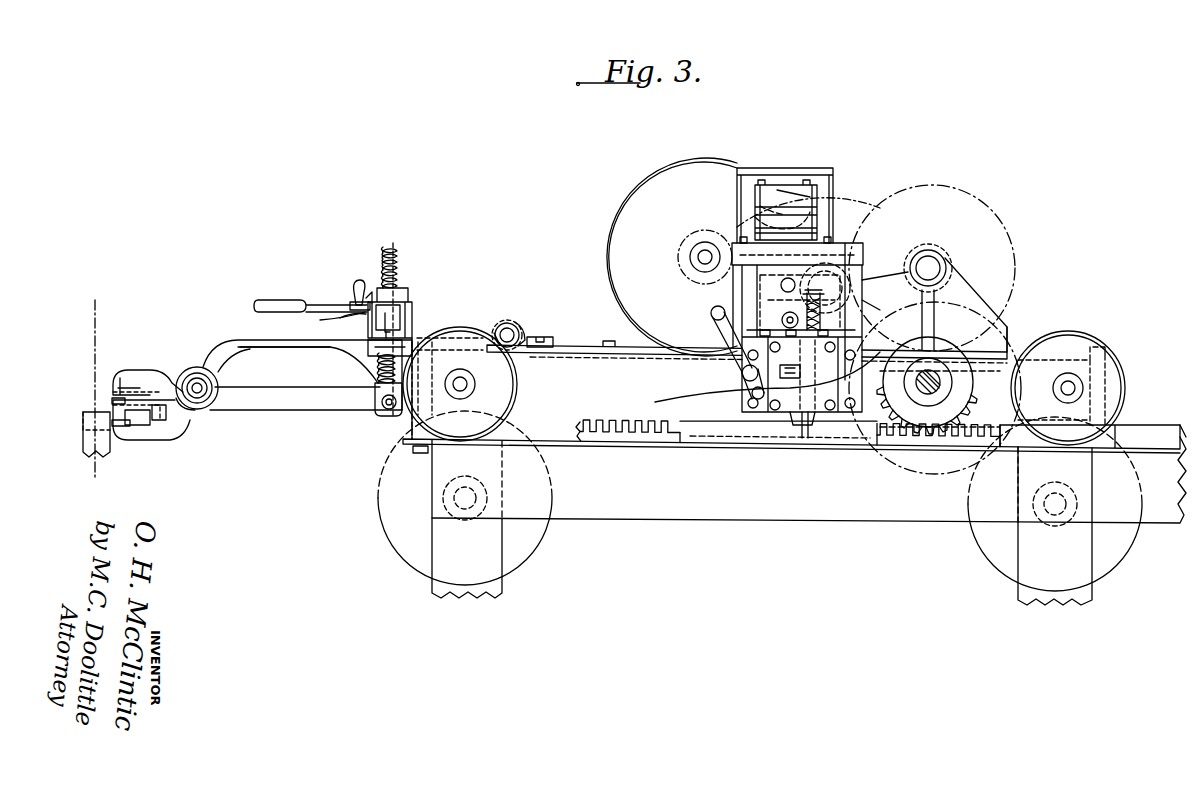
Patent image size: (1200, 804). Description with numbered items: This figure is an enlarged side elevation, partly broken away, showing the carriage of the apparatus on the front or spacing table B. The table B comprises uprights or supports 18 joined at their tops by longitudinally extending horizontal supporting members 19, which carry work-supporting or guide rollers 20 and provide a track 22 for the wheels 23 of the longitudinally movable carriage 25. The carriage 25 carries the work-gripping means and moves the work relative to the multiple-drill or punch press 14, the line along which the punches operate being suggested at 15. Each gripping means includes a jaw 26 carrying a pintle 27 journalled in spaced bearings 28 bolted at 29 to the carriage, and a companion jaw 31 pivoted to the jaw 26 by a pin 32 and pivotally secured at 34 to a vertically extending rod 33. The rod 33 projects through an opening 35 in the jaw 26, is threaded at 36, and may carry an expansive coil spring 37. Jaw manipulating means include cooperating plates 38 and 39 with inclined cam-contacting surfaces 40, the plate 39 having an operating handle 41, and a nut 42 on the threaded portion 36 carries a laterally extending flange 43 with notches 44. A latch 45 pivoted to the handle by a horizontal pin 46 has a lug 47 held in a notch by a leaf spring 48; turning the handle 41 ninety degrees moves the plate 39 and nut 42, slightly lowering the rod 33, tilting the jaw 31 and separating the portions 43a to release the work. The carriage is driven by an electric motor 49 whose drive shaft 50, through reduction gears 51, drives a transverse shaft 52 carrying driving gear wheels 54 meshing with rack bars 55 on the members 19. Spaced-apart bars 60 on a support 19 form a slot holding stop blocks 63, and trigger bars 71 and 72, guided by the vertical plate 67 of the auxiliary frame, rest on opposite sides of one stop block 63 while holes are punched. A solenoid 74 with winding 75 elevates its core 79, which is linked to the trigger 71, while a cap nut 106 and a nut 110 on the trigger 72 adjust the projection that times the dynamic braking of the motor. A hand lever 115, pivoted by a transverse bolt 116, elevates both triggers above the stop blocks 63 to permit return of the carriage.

The multiple-drill or punch press 14 is at (83, 437).
The line of punch or drill operation 15 is at (95, 338).
The uprights or supports 18 is at (470, 570).
The supporting members 19 is at (728, 498).
The work-supporting or guide rollers 20 is at (533, 543).
The track 22 is at (570, 442).
The wheels 23 is at (1103, 329).
The carriage 25 is at (648, 396).
The jaw 26 is at (130, 445).
The pintle 27 is at (520, 335).
The bearings 28 is at (510, 326).
The bolts 29 is at (553, 342).
The companion jaw 31 is at (138, 378).
The pin 32 is at (200, 398).
The vertically extending rod 33 is at (385, 357).
The pivotal connection 34 is at (388, 410).
The opening 35 is at (336, 348).
The threaded portion 36 is at (398, 255).
The expansive coil spring 37 is at (376, 370).
The plate 38 is at (418, 340).
The plate 39 is at (407, 312).
The inclined or cam-contacting surfaces 40 is at (400, 326).
The operating handle 41 is at (254, 306).
The nut 42 is at (400, 286).
The laterally extending flange 43 is at (404, 300).
The portions 43a is at (112, 402).
The notches 44 is at (370, 300).
The latch 45 is at (350, 285).
The horizontal pin 46 is at (362, 318).
The lug 47 is at (348, 305).
The leaf spring 48 is at (320, 320).
The electric motor 49 is at (661, 225).
The drive shaft 50 is at (698, 257).
The reduction gears 51 is at (878, 201).
The transverse shaft 52 is at (935, 375).
The driving gear wheels 54 is at (913, 407).
The rack bars 55 is at (928, 428).
The spaced-apart bars 60 is at (724, 424).
The stop blocks 63 is at (808, 420).
The vertical plate 67 is at (676, 396).
The trigger member or bar 71 is at (795, 420).
The trigger member or bar 72 is at (828, 420).
The solenoid 74 is at (783, 170).
The winding 75 is at (804, 196).
The core 79 is at (760, 222).
The cap nut 106 is at (808, 322).
The nut 110 is at (815, 295).
The hand lever 115 is at (722, 333).
The transverse bolt 116 is at (742, 376).
The front or spacing table B is at (809, 501).